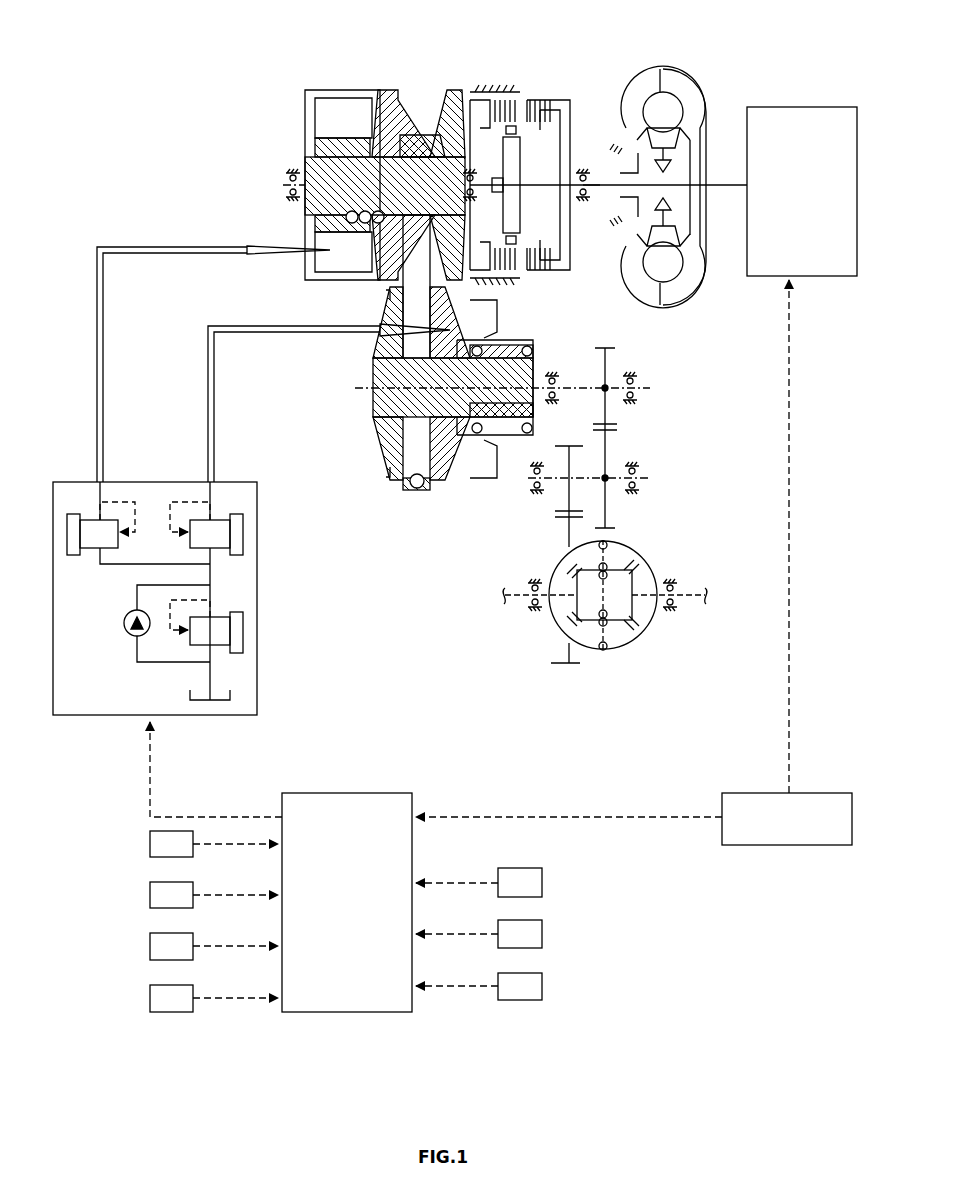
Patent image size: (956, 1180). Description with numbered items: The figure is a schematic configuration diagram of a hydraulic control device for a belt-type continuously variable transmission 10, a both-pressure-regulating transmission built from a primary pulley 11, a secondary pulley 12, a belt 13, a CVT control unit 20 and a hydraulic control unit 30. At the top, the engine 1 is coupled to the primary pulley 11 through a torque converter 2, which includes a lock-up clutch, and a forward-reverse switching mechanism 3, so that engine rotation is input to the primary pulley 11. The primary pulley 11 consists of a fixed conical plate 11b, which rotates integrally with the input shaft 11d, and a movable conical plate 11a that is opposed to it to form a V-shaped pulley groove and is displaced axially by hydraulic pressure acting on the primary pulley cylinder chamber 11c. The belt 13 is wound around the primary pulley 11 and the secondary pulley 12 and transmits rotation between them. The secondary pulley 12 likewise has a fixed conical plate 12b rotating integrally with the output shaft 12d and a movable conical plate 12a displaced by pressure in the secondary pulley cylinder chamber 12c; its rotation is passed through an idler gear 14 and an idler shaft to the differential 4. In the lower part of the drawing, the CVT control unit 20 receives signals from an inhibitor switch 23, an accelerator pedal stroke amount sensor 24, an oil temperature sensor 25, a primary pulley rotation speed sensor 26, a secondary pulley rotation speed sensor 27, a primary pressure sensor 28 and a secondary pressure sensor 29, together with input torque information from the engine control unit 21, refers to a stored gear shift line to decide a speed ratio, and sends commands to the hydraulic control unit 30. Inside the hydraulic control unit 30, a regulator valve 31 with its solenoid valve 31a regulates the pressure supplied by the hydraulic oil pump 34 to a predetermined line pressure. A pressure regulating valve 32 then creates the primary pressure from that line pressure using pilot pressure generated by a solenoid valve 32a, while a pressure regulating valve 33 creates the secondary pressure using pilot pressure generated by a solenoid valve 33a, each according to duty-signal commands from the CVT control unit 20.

The engine 1 is at (779, 107).
The torque converter 2 is at (664, 72).
The forward-reverse switching mechanism 3 is at (501, 88).
The differential 4 is at (641, 547).
The belt-type continuously variable transmission 10 is at (401, 158).
The primary pulley 11 is at (401, 159).
The movable conical plate 11a is at (388, 94).
The fixed conical plate 11b is at (462, 106).
The primary pulley cylinder chamber 11c is at (345, 100).
The input shaft 11d is at (600, 192).
The secondary pulley 12 is at (496, 407).
The movable conical plate 12a is at (440, 483).
The fixed conical plate 12b is at (394, 442).
The secondary pulley cylinder chamber 12c is at (462, 478).
The output shaft 12d is at (578, 385).
The belt 13 is at (423, 277).
The idler gear 14 is at (569, 470).
The CVT control unit 20 is at (308, 1013).
The engine control unit 21 is at (752, 846).
The inhibitor switch 23 is at (535, 886).
The accelerator pedal stroke amount sensor 24 is at (535, 937).
The oil temperature sensor 25 is at (535, 989).
The primary pulley rotation speed sensor 26 is at (150, 844).
The secondary pulley rotation speed sensor 27 is at (150, 896).
The primary pressure sensor 28 is at (150, 947).
The secondary pressure sensor 29 is at (150, 999).
The hydraulic control unit 30 is at (227, 509).
The regulator valve 31 is at (244, 608).
The solenoid valve 31a is at (243, 637).
The pressure regulating valve 32 is at (69, 563).
The solenoid valve 32a is at (67, 533).
The pressure regulating valve 33 is at (244, 507).
The solenoid valve 33a is at (243, 540).
The hydraulic oil pump 34 is at (128, 630).